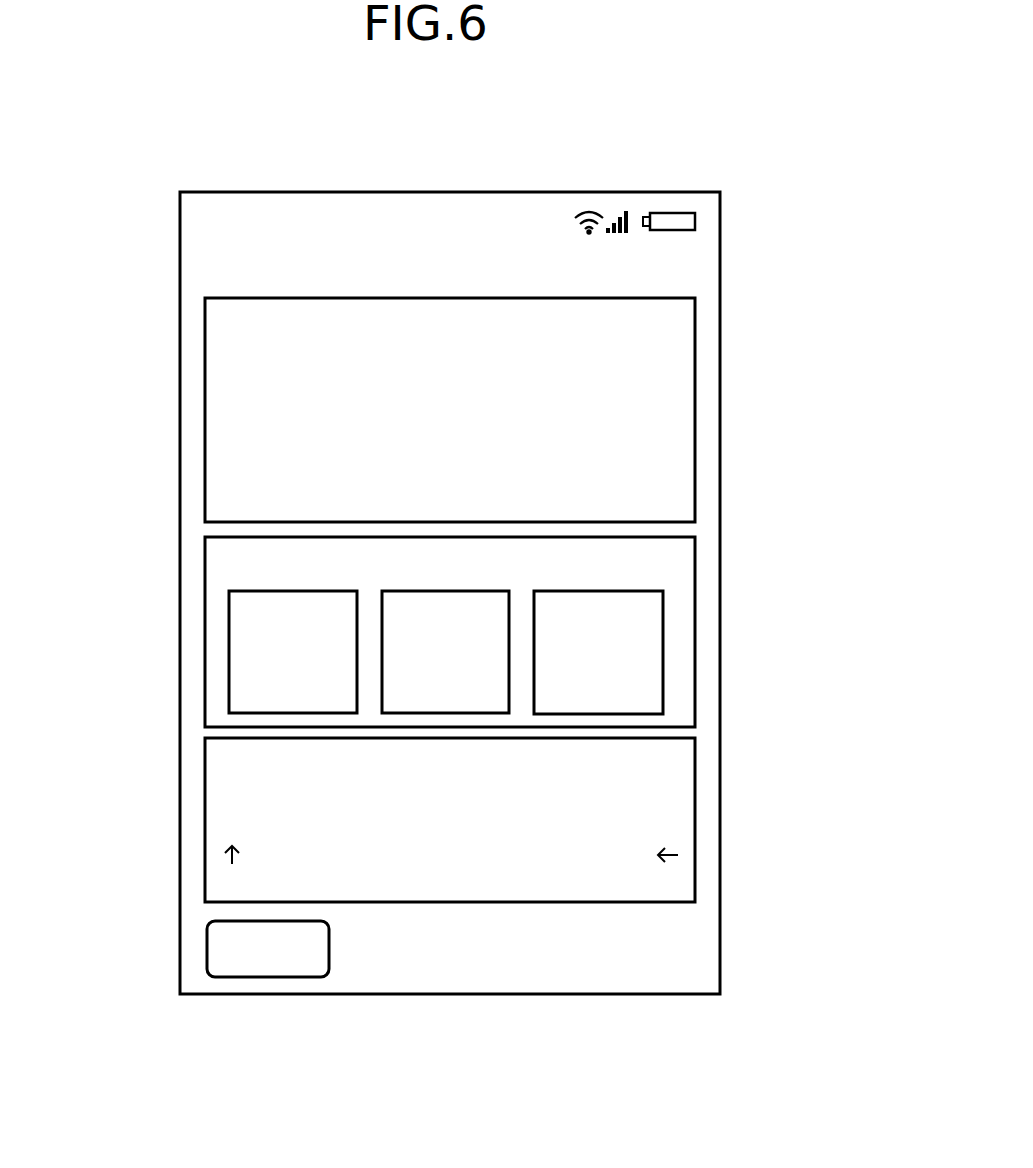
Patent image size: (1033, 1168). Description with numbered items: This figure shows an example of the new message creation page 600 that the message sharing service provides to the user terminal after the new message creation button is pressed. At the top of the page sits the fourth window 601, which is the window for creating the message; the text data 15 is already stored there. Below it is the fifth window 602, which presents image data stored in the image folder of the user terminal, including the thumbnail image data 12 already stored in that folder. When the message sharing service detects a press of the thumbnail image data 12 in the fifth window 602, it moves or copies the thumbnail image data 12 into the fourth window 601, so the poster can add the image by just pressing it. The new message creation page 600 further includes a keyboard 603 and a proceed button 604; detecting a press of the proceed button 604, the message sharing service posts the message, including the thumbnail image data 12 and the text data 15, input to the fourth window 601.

The new message creation page 600 is at (702, 283).
The fourth window 601 is at (697, 379).
The fifth window 602 is at (697, 592).
The keyboard 603 is at (697, 769).
The proceed button 604 is at (205, 948).
The text data 15 is at (227, 339).
The thumbnail image data 12 is at (229, 653).